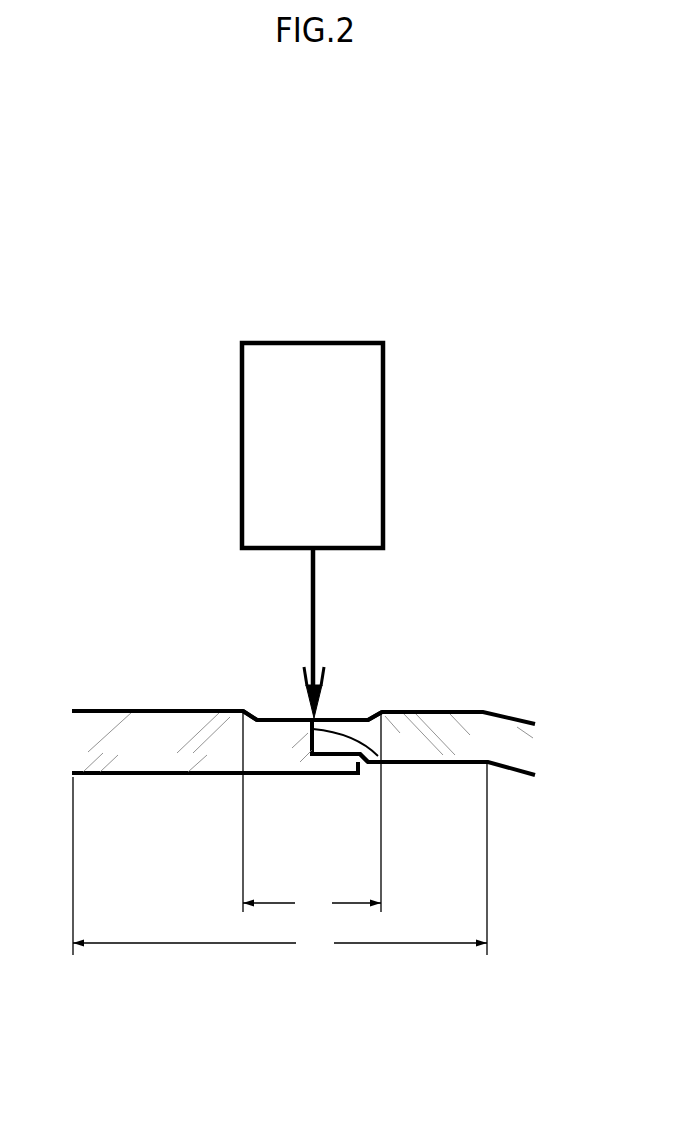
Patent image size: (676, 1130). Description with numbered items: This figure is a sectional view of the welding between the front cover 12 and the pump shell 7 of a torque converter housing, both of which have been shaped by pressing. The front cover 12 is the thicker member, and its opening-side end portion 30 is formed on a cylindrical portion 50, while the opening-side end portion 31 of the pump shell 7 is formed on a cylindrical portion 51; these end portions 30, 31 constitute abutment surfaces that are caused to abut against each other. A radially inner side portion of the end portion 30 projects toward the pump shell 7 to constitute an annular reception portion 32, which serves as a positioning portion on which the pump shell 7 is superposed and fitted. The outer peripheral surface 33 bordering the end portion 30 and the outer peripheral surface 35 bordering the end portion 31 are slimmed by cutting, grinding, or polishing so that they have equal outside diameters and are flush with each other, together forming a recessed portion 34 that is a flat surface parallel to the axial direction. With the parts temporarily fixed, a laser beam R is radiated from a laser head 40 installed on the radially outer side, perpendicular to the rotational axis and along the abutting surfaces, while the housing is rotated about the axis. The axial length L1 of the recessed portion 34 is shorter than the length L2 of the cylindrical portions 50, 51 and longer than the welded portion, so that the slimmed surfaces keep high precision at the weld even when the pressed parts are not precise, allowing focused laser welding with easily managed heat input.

The laser head 40 is at (385, 428).
The laser beam R is at (313, 588).
The front cover 12 is at (145, 720).
The pump shell 7 is at (481, 722).
The cylindrical portion 50 is at (85, 710).
The cylindrical portion 51 is at (423, 712).
The recessed portion 34 is at (247, 697).
The outer peripheral surface 33 is at (285, 718).
The outer peripheral surface 35 is at (337, 717).
The opening-side end portion 31 is at (307, 742).
The opening-side end portion 30 is at (382, 758).
The reception portion 32 is at (333, 778).
The axial length of the recessed portion L1 is at (312, 815).
The length of the cylindrical portions L2 is at (280, 862).